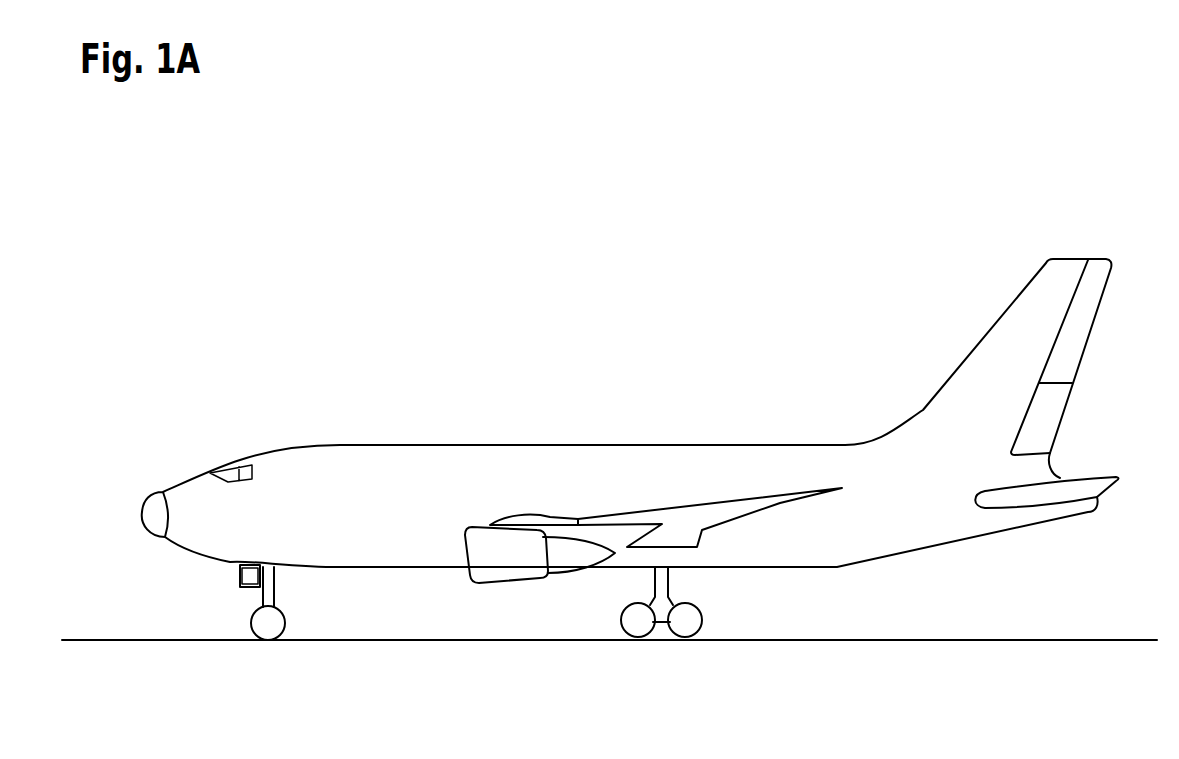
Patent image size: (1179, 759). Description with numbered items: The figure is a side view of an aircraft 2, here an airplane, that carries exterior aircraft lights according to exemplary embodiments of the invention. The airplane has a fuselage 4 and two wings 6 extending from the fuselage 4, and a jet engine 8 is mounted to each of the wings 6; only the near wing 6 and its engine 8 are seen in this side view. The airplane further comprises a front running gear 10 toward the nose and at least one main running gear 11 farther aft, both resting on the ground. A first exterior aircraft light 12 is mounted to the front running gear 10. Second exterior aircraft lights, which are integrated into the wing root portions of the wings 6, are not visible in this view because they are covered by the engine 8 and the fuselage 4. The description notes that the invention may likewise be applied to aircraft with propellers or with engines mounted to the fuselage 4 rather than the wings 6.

The aircraft 2 is at (630, 473).
The fuselage 4 is at (507, 472).
The wing 6 is at (753, 500).
The jet engine 8 is at (498, 589).
The front running gear 10 is at (294, 631).
The main running gear 11 is at (614, 631).
The first exterior aircraft light 12 is at (250, 575).